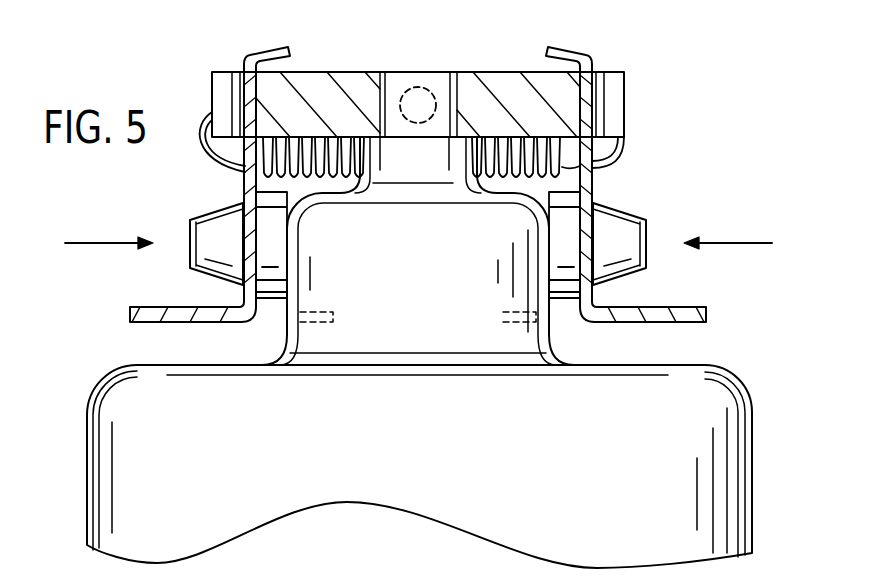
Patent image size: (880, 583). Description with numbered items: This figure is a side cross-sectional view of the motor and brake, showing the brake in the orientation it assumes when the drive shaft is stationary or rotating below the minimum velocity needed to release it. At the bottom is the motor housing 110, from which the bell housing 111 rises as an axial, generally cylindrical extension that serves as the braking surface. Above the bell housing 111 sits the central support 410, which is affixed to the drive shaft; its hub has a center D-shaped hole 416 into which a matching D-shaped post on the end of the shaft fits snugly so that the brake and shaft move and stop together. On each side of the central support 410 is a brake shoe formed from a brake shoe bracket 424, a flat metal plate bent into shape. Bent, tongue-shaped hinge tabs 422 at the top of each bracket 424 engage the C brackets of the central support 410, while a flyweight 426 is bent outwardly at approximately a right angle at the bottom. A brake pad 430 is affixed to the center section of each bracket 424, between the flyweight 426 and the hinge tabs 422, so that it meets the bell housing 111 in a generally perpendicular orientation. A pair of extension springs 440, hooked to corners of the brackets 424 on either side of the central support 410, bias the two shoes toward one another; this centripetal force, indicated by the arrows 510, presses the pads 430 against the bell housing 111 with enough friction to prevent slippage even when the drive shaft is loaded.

The motor housing 110 is at (564, 455).
The bell housing 111 is at (411, 297).
The central support 410 is at (486, 46).
The D-shaped hole 416 is at (394, 87).
The hinge tabs 422 is at (272, 46).
The brake shoe bracket 424 is at (600, 190).
The flyweight 426 is at (140, 325).
The brake pad 430 is at (188, 222).
The extension springs 440 is at (208, 120).
The arrows 510 is at (75, 243).